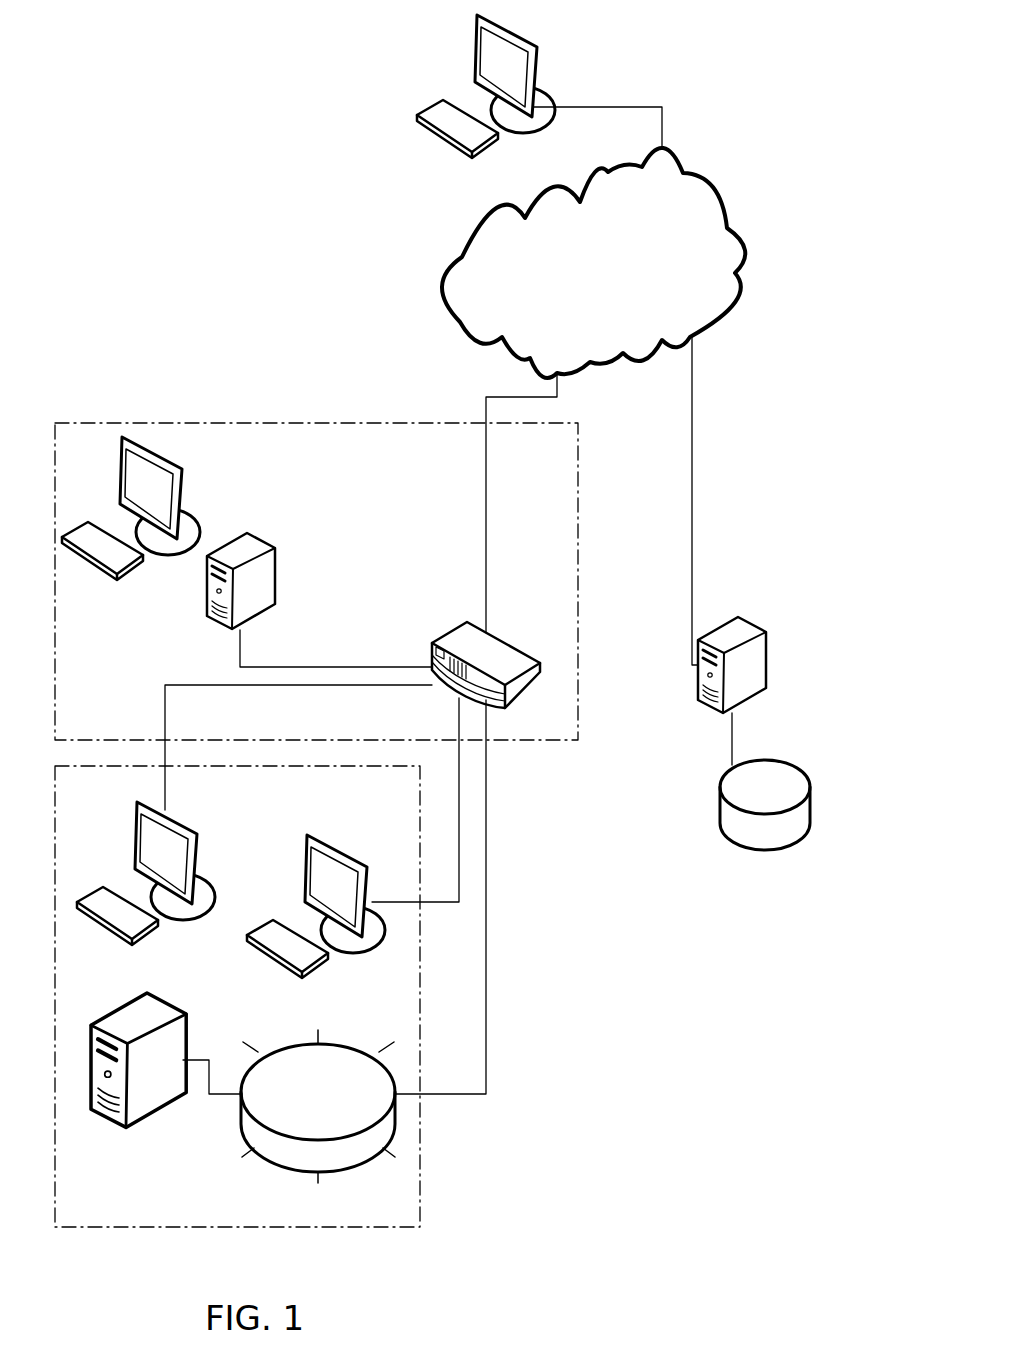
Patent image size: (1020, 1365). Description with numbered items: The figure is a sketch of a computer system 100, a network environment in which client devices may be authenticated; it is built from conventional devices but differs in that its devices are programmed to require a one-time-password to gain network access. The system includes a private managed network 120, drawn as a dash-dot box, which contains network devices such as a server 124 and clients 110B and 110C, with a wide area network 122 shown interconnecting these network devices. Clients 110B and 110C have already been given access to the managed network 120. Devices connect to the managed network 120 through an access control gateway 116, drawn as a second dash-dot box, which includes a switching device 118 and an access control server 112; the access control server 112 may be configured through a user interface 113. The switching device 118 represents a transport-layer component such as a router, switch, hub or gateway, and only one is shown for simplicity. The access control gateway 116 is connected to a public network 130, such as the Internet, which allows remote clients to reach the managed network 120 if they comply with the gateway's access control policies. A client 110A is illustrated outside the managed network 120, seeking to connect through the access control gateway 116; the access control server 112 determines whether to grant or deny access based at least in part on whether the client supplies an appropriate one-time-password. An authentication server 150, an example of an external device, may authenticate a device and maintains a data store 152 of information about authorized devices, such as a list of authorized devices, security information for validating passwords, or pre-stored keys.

The computer system 100 is at (777, 81).
The client 110A is at (477, 18).
The client 110B is at (170, 815).
The client 110C is at (366, 860).
The access control server 112 is at (277, 563).
The user interface 113 is at (189, 483).
The access control gateway 116 is at (579, 672).
The switching device 118 is at (492, 645).
The managed network 120 is at (277, 1227).
The wide area network 122 is at (330, 1058).
The server 124 is at (150, 1000).
The public network 130 is at (737, 278).
The authentication server 150 is at (757, 623).
The data store 152 is at (810, 832).